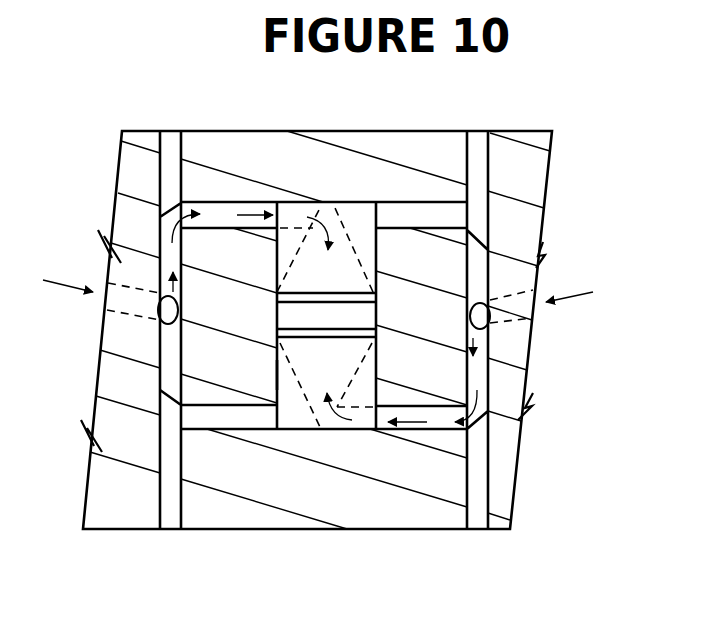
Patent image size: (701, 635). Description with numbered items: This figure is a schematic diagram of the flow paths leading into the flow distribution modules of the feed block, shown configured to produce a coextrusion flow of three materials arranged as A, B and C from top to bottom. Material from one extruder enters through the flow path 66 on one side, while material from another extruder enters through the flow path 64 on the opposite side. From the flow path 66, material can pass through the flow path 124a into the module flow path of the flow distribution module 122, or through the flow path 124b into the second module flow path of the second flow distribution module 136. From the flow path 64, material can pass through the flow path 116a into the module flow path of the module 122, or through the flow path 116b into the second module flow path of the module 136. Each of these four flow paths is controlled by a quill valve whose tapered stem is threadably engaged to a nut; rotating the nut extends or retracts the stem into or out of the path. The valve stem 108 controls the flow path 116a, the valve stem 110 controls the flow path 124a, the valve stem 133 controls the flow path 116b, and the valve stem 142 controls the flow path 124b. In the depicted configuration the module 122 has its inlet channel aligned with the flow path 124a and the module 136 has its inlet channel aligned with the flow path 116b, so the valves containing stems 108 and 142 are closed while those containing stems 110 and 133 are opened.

The valve stem 108 is at (477, 167).
The valve stem 110 is at (172, 160).
The valve stem 142 is at (170, 500).
The valve stem 133 is at (470, 487).
The flow path 124a is at (222, 217).
The flow path 124b is at (202, 424).
The flow path 116a is at (423, 213).
The flow path 116b is at (433, 417).
The flow distribution module 122 is at (350, 225).
The second flow distribution module 136 is at (285, 375).
The flow path 66 is at (162, 315).
The flow path 64 is at (493, 320).